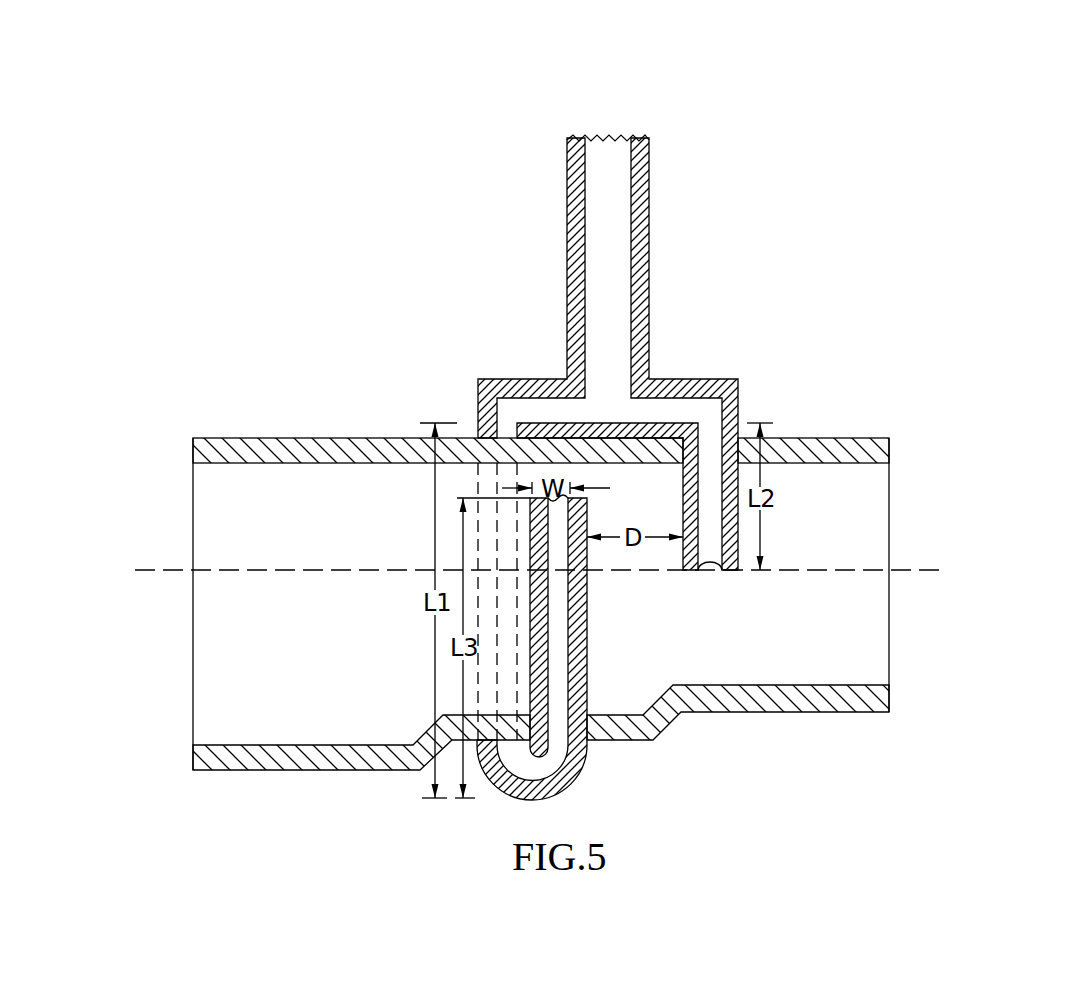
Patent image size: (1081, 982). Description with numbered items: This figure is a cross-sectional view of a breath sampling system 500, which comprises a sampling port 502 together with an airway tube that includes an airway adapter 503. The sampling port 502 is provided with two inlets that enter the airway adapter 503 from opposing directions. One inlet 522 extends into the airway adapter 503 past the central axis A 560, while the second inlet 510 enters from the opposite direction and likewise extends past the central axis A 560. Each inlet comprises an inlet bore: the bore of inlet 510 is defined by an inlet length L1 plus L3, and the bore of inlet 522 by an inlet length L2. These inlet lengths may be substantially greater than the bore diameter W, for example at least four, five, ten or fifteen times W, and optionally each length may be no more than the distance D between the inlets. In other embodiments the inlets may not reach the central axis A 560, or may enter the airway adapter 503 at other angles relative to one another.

The breath sampling system 500 is at (933, 125).
The sampling port 502 is at (548, 215).
The airway adapter 503 is at (340, 378).
The inlet 510 is at (587, 648).
The inlet 522 is at (738, 520).
The central axis A 560 is at (943, 556).